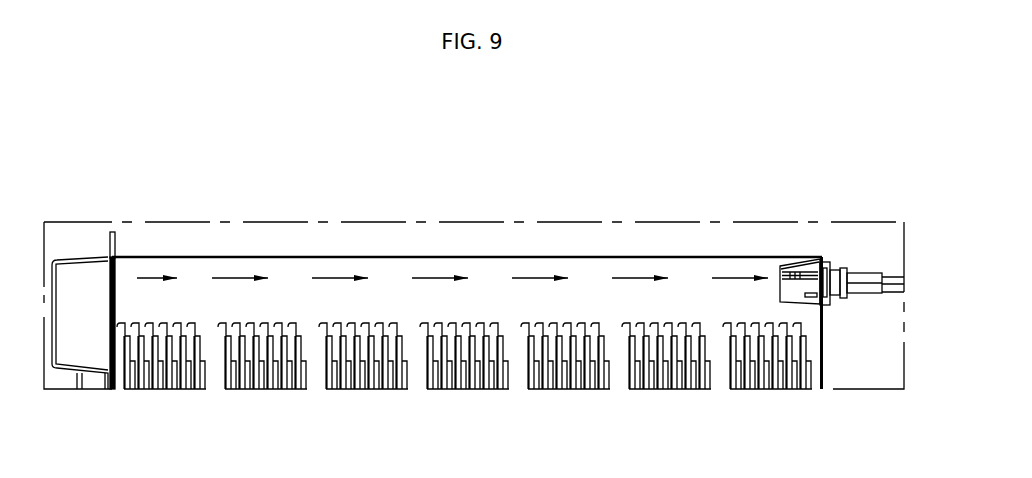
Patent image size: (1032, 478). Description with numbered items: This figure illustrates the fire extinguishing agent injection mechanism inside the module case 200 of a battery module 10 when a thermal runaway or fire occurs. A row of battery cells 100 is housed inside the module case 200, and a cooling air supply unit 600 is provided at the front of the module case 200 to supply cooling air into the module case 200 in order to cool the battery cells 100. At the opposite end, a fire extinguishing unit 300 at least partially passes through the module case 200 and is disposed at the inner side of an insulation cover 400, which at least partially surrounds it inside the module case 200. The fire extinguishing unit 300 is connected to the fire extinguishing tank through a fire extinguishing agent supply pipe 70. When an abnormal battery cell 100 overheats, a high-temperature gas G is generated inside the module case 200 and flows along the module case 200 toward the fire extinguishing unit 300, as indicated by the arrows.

The battery module 10 is at (205, 156).
The battery cell 100 is at (183, 392).
The module case 200 is at (723, 256).
The fire extinguishing unit 300 is at (857, 274).
The insulation cover 400 is at (807, 262).
The cooling air supply unit 600 is at (84, 268).
The fire extinguishing agent supply pipe 70 is at (893, 282).
The high-temperature gas G is at (229, 278).